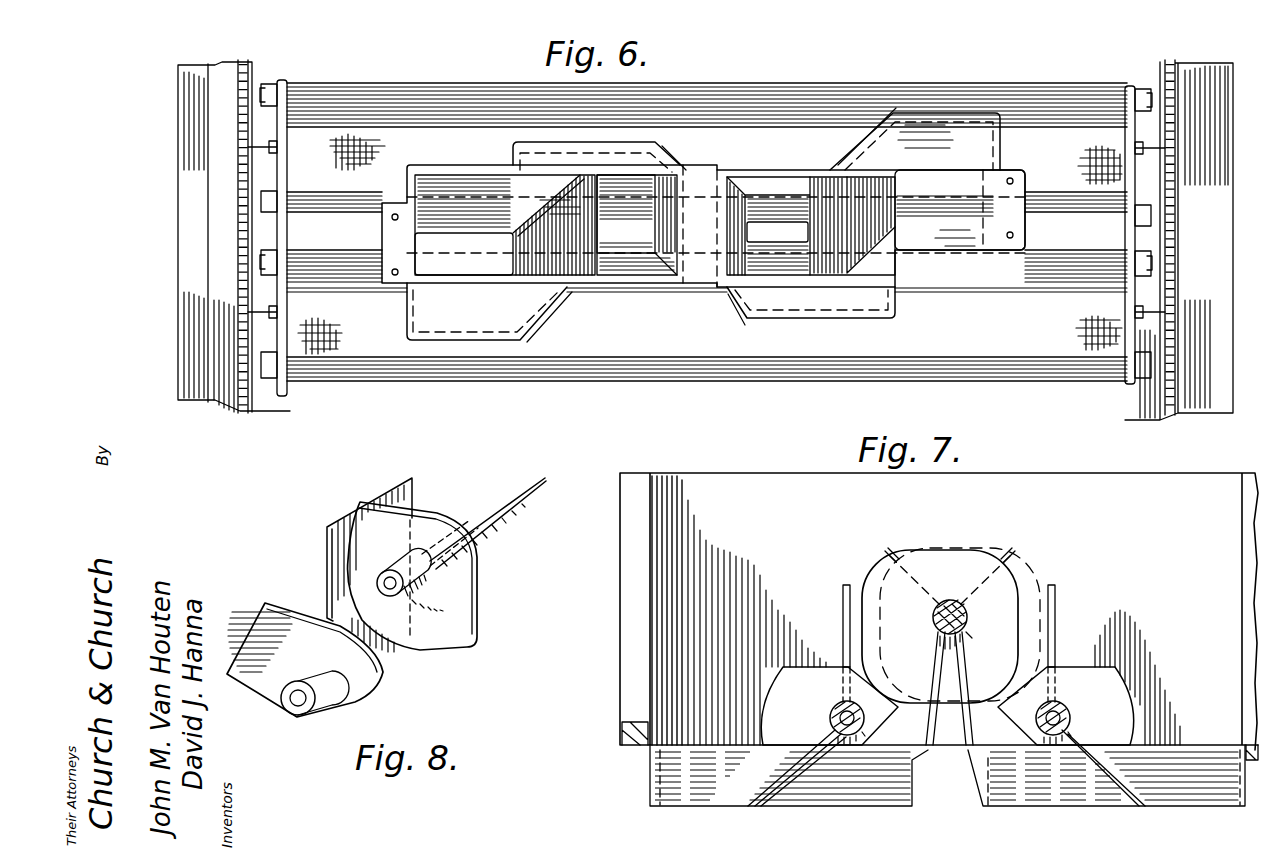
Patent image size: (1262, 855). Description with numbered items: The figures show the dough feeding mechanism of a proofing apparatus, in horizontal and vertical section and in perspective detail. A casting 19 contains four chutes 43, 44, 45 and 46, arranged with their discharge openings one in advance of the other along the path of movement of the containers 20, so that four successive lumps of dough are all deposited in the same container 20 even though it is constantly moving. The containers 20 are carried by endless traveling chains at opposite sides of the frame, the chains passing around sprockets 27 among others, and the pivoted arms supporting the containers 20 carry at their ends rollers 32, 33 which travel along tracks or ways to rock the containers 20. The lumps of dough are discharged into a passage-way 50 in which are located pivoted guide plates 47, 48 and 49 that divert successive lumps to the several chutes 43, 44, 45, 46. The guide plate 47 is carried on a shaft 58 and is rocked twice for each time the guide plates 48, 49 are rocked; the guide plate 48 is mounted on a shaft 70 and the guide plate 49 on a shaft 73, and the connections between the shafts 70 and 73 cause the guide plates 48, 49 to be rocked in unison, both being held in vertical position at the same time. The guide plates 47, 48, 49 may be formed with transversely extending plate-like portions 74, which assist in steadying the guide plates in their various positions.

In FIG. 6, the casting 19 is at (701, 334).
In FIG. 6, the containers 20 is at (707, 232).
In FIG. 6, the sprockets 27 is at (246, 410).
In FIG. 6, the rollers 32 is at (272, 258).
In FIG. 6, the rollers 33 is at (270, 238).
In FIG. 6, the chute 43 is at (505, 225).
In FIG. 7, the chute 43 is at (752, 805).
In FIG. 6, the chute 44 is at (811, 226).
In FIG. 7, the chute 44 is at (1068, 805).
In FIG. 6, the chute 45 is at (637, 225).
In FIG. 7, the chute 45 is at (876, 805).
In FIG. 6, the chute 46 is at (960, 210).
In FIG. 7, the chute 46 is at (1178, 805).
In FIG. 7, the guide plate 47 is at (1014, 557).
In FIG. 8, the guide plate 47 is at (515, 501).
In FIG. 7, the guide plate 48 is at (843, 601).
In FIG. 8, the guide plate 48 is at (414, 486).
In FIG. 7, the guide plate 49 is at (1056, 608).
In FIG. 7, the passage-way 50 is at (939, 616).
In FIG. 7, the shaft 58 is at (960, 608).
In FIG. 7, the shaft 70 is at (830, 718).
In FIG. 7, the shaft 73 is at (1070, 717).
In FIG. 8, the plate-like portions 74 is at (275, 622).